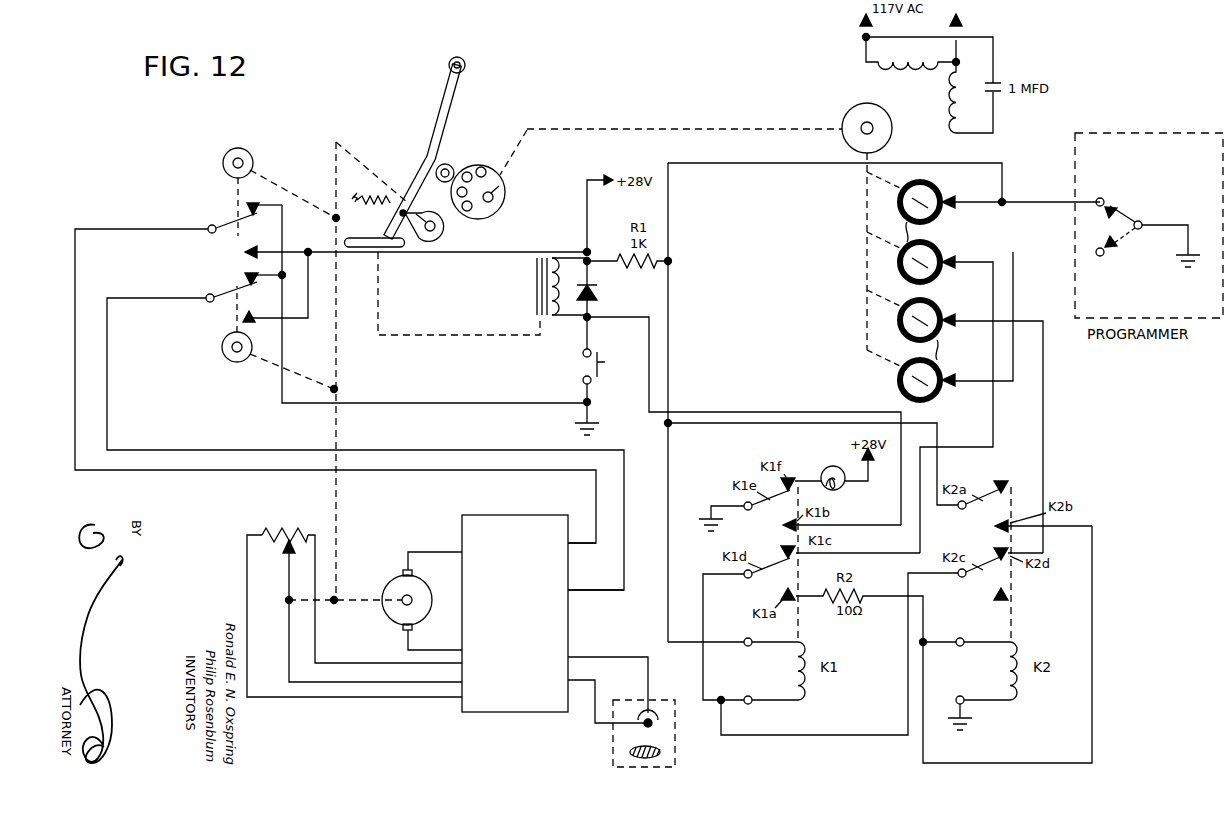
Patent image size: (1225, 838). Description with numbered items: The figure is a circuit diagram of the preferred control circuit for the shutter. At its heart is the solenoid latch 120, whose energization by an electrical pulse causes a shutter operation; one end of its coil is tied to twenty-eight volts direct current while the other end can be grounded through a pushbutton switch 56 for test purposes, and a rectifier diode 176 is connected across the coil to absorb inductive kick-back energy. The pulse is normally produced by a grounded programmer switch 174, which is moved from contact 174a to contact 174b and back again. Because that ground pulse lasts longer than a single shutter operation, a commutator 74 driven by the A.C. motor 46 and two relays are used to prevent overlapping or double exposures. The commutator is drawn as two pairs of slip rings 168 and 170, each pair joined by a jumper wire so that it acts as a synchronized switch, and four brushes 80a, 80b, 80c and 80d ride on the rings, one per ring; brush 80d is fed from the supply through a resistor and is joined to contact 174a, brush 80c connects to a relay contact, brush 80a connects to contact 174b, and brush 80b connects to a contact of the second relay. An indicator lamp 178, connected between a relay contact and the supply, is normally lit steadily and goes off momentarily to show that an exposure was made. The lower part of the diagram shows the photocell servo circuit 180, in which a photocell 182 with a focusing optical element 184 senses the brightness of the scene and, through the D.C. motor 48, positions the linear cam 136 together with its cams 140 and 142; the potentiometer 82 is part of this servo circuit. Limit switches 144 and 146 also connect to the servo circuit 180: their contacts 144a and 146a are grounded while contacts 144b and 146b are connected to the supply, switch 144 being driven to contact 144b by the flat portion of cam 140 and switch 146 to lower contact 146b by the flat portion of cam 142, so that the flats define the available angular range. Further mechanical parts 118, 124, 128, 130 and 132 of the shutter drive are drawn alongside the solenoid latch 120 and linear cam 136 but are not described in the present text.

The A.C. motor 46 is at (850, 108).
The D.C. motor 48 is at (386, 590).
The pushbutton switch 56 is at (598, 375).
The commutator 74 is at (769, 315).
The brush 80a is at (956, 326).
The brush 80b is at (971, 426).
The brush 80c is at (946, 397).
The brush 80d is at (1000, 212).
The potentiometer 82 is at (297, 527).
The lever arm 118 is at (427, 118).
The solenoid latch 120 is at (535, 287).
The return spring 124 is at (377, 210).
The pivot pin 128 is at (453, 166).
The perforated wheel 130 is at (506, 194).
The pin 132 is at (407, 210).
The linear cam 136 is at (447, 233).
The cam 140 is at (230, 358).
The cam 142 is at (228, 156).
The limit switch 144 is at (222, 292).
The limit switch contact 144a is at (250, 271).
The limit switch contact 144b is at (240, 319).
The limit switch 146 is at (218, 223).
The limit switch contact 146a is at (256, 205).
The limit switch contact 146b is at (256, 250).
The slip rings 168 is at (898, 378).
The slip rings 170 is at (898, 260).
The programmer switch 174 is at (1125, 216).
The programmer switch contact 174a is at (1096, 201).
The programmer switch contact 174b is at (1096, 256).
The rectifier diode 176 is at (595, 291).
The indicator lamp 178 is at (827, 467).
The photocell servo circuit 180 is at (515, 613).
The photocell 182 is at (645, 725).
The focusing optical element 184 is at (661, 753).